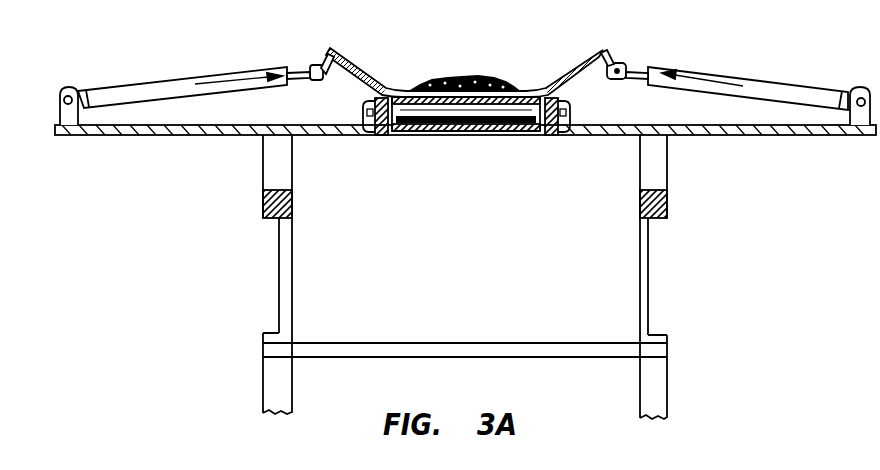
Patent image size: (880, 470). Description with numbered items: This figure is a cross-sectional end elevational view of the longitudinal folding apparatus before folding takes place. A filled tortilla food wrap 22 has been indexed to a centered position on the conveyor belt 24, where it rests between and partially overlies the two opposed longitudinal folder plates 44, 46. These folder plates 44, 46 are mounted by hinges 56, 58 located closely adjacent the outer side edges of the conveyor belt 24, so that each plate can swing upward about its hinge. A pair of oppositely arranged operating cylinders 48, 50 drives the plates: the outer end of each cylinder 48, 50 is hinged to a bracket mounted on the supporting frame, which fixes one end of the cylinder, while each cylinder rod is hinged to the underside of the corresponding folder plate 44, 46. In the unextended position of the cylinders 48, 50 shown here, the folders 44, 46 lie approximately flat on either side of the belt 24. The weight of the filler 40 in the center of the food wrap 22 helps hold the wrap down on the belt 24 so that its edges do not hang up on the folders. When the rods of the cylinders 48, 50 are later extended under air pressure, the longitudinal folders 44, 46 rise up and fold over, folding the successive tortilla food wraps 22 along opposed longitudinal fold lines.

The tortilla food wrap 22 is at (598, 57).
The conveyor belt 24 is at (478, 132).
The filler 40 is at (470, 82).
The longitudinal folder plate 44 is at (585, 72).
The longitudinal folder plate 46 is at (353, 75).
The operating cylinder 48 is at (743, 78).
The operating cylinder 50 is at (147, 82).
The hinge 56 is at (567, 122).
The hinge 58 is at (368, 125).